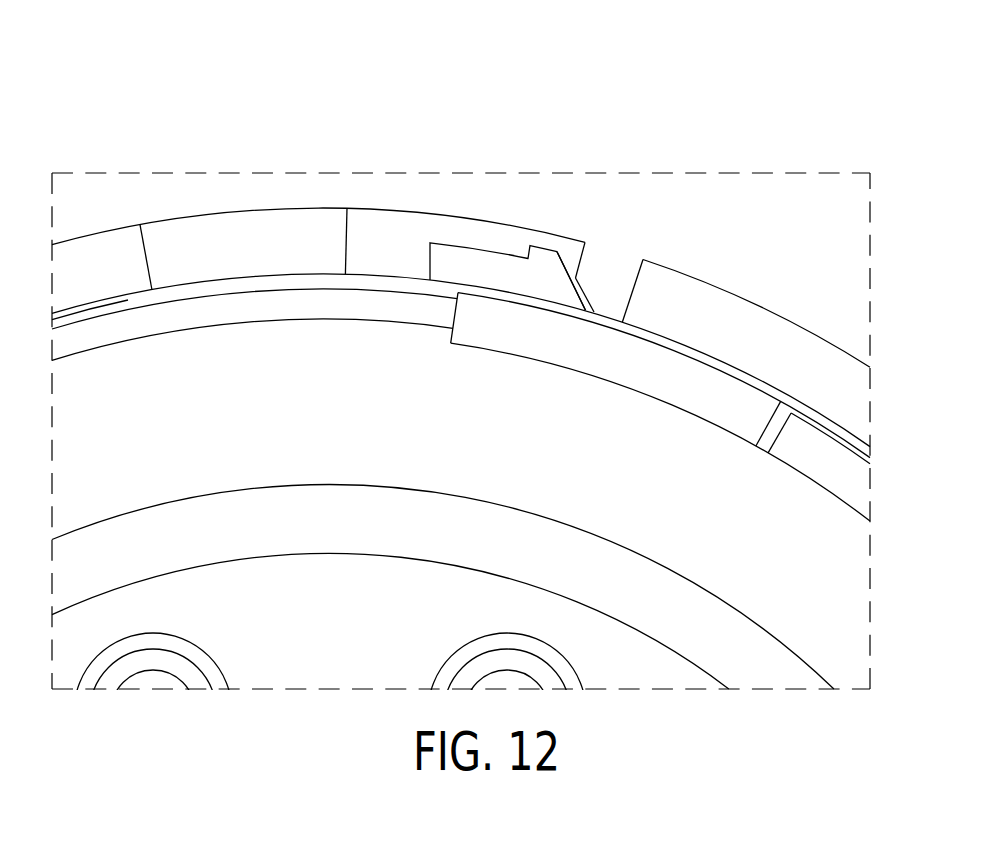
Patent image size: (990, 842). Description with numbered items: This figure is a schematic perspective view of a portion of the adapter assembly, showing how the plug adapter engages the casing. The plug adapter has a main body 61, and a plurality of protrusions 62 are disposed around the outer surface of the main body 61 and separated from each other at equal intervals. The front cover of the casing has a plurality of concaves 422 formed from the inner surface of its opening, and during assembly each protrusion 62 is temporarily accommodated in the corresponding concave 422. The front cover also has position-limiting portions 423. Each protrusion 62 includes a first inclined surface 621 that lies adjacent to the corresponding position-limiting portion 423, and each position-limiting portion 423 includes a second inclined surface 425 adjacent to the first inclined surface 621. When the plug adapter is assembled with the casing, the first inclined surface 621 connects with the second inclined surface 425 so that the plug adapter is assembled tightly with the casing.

The main body 61 is at (160, 415).
The protrusion 62 is at (490, 268).
The first inclined surface 621 is at (563, 250).
The concave 422 is at (232, 252).
The position-limiting portion 423 is at (616, 262).
The second inclined surface 425 is at (587, 292).